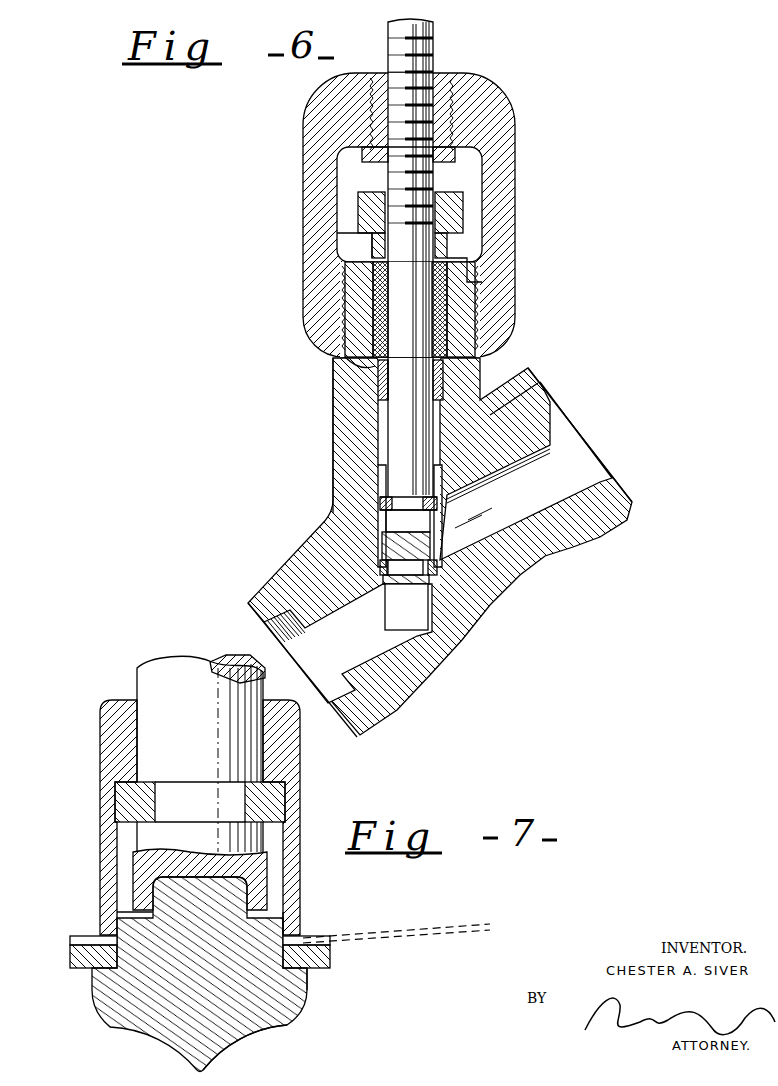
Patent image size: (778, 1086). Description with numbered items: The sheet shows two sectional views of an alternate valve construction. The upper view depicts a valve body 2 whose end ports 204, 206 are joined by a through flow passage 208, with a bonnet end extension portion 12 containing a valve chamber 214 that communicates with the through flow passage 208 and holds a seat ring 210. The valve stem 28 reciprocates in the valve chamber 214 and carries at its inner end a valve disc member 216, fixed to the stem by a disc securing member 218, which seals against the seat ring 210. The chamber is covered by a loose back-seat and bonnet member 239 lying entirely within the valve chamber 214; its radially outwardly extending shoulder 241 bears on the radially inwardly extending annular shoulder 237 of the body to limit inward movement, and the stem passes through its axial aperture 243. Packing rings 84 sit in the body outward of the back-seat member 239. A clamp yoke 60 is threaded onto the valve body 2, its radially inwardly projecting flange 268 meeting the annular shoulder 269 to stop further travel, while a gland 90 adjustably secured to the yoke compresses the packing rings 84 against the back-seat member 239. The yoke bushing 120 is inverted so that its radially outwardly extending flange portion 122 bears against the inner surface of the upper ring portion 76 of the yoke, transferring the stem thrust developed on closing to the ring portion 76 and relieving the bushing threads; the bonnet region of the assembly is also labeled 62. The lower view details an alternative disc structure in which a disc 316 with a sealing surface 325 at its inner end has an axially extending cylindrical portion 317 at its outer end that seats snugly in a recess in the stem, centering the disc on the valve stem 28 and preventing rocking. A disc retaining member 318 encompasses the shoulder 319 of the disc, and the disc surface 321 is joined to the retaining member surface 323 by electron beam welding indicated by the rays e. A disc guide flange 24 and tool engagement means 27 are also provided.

In FIG. 6, the valve body 2 is at (460, 647).
In FIG. 6, the bonnet end extension portion 12 is at (347, 423).
In FIG. 6, the valve stem 28 is at (434, 34).
In FIG. 7, the valve stem 28 is at (208, 733).
In FIG. 6, the clamp yoke 60 is at (265, 147).
In FIG. 6, the bonnet 62 is at (313, 317).
In FIG. 6, the upper ring portion 76 is at (317, 118).
In FIG. 6, the packing rings 84 is at (384, 288).
In FIG. 6, the gland 90 is at (365, 191).
In FIG. 6, the yoke bushing 120 is at (477, 80).
In FIG. 6, the radially outwardly extending flange portion 122 is at (448, 151).
In FIG. 6, the end port 204 is at (316, 653).
In FIG. 6, the end port 206 is at (560, 448).
In FIG. 6, the through flow passage 208 is at (424, 629).
In FIG. 6, the seat ring 210 is at (435, 580).
In FIG. 6, the valve chamber 214 is at (380, 450).
In FIG. 6, the valve disc member 216 is at (408, 552).
In FIG. 6, the disc securing member 218 is at (378, 482).
In FIG. 6, the annular shoulder 237 is at (373, 369).
In FIG. 6, the loose back-seat and bonnet member 239 is at (380, 397).
In FIG. 6, the radially outwardly extending shoulder 241 is at (443, 372).
In FIG. 6, the axial aperture 243 is at (387, 383).
In FIG. 6, the radially inwardly projecting flange 268 is at (347, 258).
In FIG. 6, the annular shoulder 269 is at (472, 277).
In FIG. 7, the disc guide flange 24 is at (78, 958).
In FIG. 7, the tool engagement means 27 is at (72, 938).
In FIG. 7, the disc 316 is at (283, 1012).
In FIG. 7, the axially extending cylindrical portion 317 is at (167, 888).
In FIG. 7, the disc retaining member 318 is at (113, 791).
In FIG. 7, the shoulder 319 is at (291, 936).
In FIG. 7, the disc surface 321 is at (106, 932).
In FIG. 7, the retaining member surface 323 is at (309, 972).
In FIG. 7, the sealing surface 325 is at (293, 1028).
In FIG. 7, the rays e is at (447, 927).